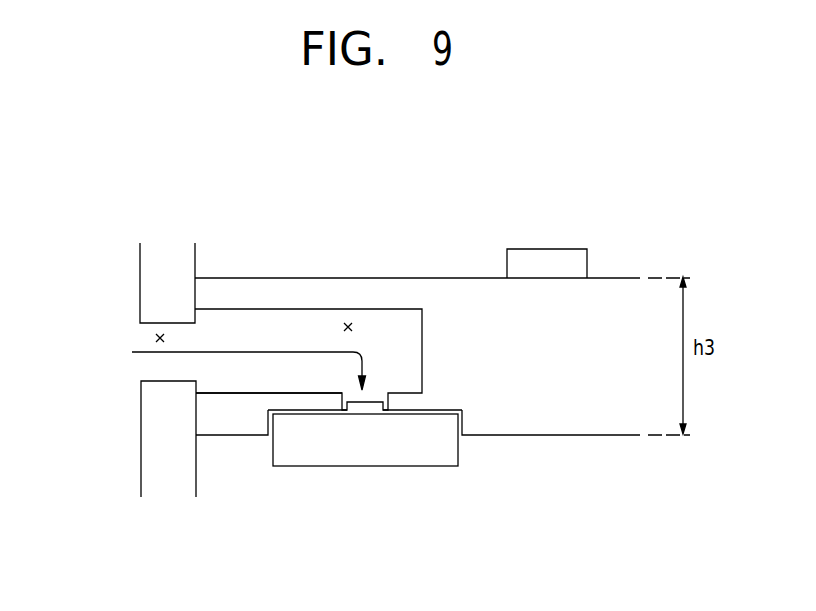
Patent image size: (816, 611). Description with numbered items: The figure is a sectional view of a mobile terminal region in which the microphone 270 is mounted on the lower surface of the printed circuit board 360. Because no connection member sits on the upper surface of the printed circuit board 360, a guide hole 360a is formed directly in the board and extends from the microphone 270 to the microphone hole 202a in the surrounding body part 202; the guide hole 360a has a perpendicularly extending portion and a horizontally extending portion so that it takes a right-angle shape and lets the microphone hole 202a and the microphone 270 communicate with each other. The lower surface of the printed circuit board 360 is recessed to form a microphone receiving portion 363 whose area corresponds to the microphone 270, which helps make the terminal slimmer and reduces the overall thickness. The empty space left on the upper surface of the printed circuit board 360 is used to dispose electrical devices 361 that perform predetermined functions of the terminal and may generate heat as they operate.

The printed circuit board 360 is at (563, 423).
The guide hole 360a is at (348, 322).
The electrical devices 361 is at (545, 258).
The microphone receiving portion 363 is at (282, 412).
The microphone 270 is at (404, 456).
The insulating layer 202 is at (148, 427).
The microphone hole 202a is at (153, 340).